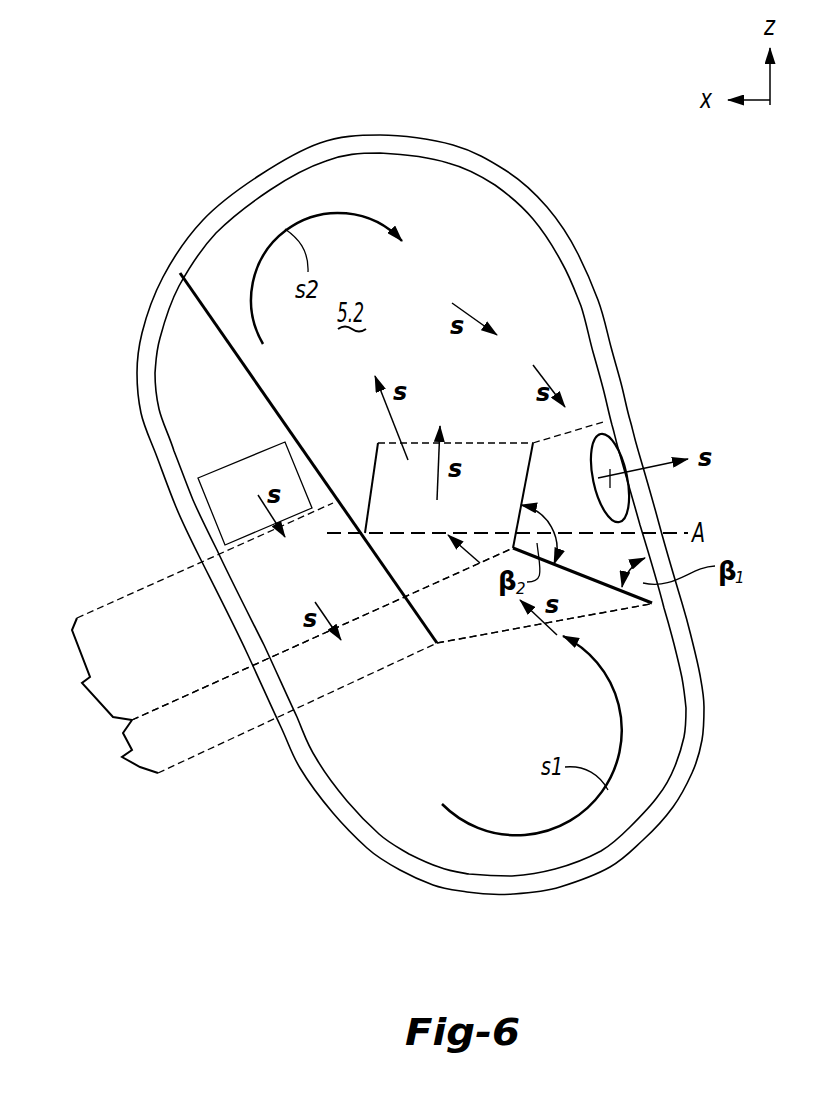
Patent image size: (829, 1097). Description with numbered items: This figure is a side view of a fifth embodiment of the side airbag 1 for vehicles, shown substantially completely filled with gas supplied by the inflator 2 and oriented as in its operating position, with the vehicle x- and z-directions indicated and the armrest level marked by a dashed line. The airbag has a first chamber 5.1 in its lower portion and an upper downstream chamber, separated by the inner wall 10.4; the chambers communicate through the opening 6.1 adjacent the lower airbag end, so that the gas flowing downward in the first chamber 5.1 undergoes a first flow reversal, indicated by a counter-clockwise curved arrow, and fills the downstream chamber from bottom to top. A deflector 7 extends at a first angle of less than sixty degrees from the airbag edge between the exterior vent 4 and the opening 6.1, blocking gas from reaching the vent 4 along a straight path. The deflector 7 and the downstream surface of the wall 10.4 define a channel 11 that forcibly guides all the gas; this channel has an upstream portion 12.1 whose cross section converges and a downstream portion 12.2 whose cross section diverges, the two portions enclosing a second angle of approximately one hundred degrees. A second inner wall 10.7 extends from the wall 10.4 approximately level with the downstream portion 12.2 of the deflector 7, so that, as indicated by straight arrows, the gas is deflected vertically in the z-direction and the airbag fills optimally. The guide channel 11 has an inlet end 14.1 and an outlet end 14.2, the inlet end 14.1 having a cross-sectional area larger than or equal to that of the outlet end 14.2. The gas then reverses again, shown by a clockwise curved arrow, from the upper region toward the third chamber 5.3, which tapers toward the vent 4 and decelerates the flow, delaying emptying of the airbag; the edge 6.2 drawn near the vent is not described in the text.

The side airbag assembly 1 is at (556, 200).
The inflator 2 is at (212, 518).
The exterior vent 4 is at (627, 493).
The first chamber 5.1 is at (648, 698).
The third chamber 5.3 is at (615, 418).
The opening 6.1 is at (554, 645).
The upper edge of partition 6.2 is at (594, 421).
The deflector 7 is at (622, 603).
The inner wall 10.4 is at (228, 342).
The second inner wall 10.7 is at (429, 457).
The channel 11 is at (648, 604).
The upstream portion 12.1 is at (364, 660).
The downstream portion 12.2 is at (274, 611).
The inlet end 14.1 is at (604, 615).
The outlet end 14.2 is at (488, 443).